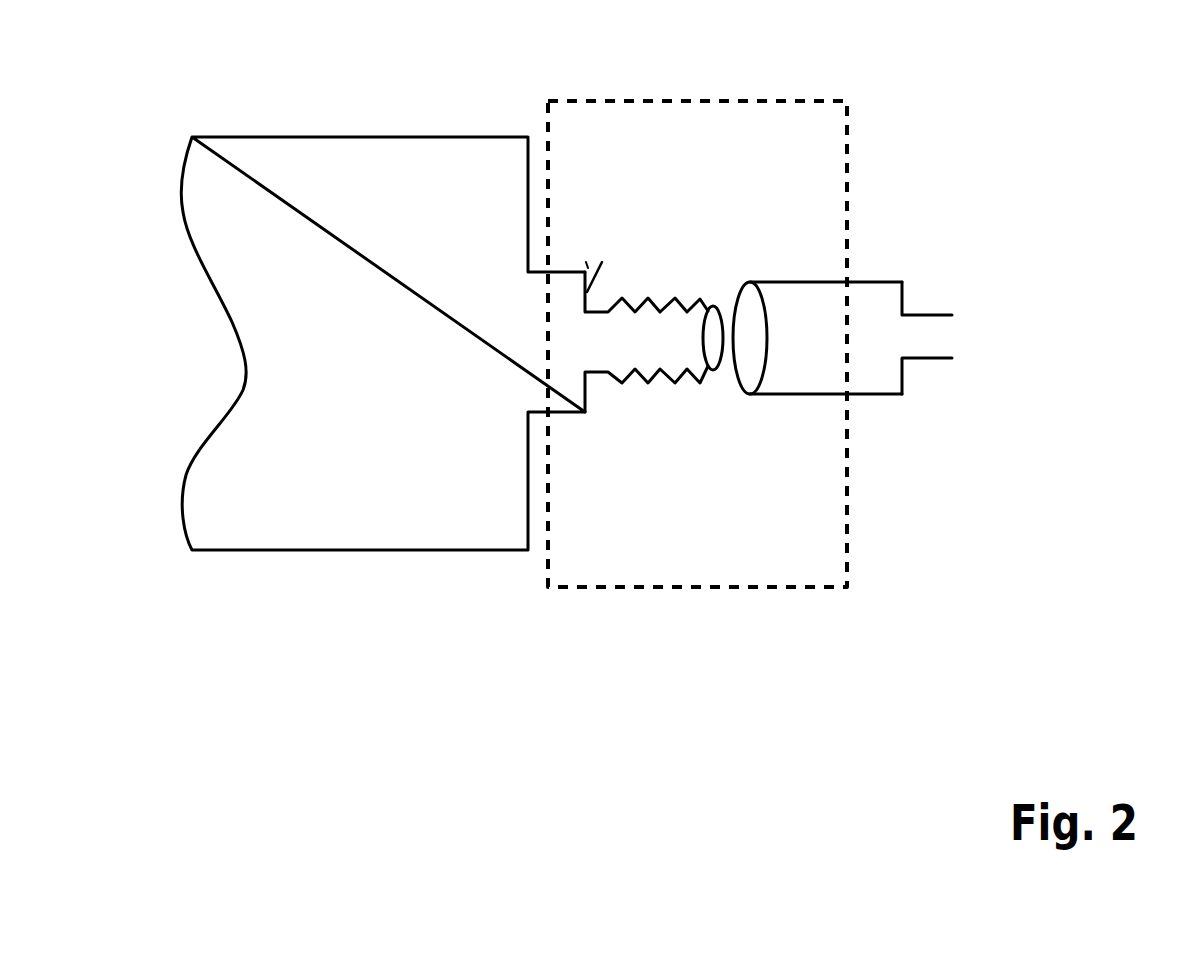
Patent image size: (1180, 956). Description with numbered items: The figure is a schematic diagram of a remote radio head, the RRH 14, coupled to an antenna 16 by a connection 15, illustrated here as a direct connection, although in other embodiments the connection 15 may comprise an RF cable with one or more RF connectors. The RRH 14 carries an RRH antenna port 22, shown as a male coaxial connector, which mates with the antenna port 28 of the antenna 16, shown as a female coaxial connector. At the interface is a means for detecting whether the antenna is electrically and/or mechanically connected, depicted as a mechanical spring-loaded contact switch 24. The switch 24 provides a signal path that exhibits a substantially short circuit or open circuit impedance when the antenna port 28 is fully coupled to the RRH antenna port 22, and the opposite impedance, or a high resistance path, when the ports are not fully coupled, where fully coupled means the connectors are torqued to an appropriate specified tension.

The RRH 14 is at (280, 130).
The connection 15 is at (652, 101).
The antenna 16 is at (1030, 299).
The RRH antenna port 22 is at (660, 400).
The spring-loaded contact switch 24 is at (600, 257).
The antenna port 28 is at (880, 262).